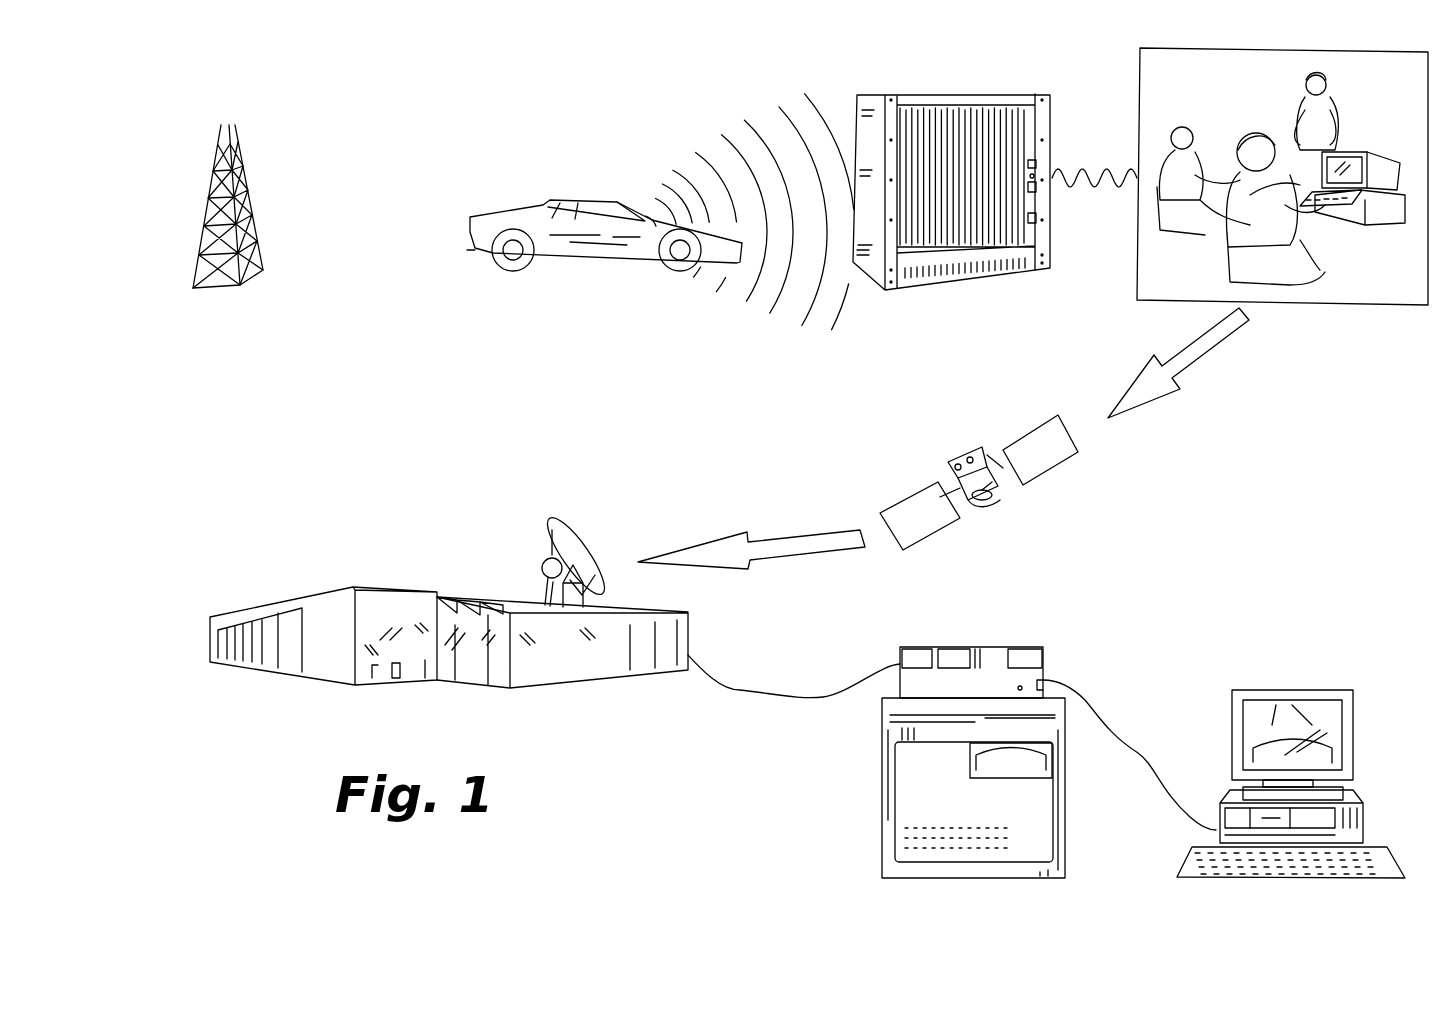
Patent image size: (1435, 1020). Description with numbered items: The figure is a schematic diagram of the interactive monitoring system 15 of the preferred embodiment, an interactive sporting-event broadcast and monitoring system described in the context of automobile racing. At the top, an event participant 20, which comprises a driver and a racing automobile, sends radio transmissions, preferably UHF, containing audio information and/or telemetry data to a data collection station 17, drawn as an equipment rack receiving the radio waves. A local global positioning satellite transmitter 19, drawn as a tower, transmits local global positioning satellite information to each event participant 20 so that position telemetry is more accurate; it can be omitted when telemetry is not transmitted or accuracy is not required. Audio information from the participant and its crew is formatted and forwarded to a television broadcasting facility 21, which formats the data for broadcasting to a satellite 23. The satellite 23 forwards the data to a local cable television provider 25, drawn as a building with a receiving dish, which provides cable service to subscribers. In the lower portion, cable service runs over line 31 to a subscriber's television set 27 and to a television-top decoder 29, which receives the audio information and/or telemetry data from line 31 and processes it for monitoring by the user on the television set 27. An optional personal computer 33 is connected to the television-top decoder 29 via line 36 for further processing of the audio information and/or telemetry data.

The interactive monitoring system 15 is at (645, 120).
The data collection station 17 is at (947, 290).
The local global positioning satellite transmitter 19 is at (258, 280).
The event participant 20 is at (555, 267).
The television broadcasting facility 21 is at (1312, 303).
The satellite 23 is at (1053, 475).
The local cable television provider 25 is at (620, 678).
The television set 27 is at (882, 787).
The television-top decoder 29 is at (1003, 645).
The line 31 is at (763, 697).
The personal computer 33 is at (1360, 707).
The line 36 is at (1138, 755).